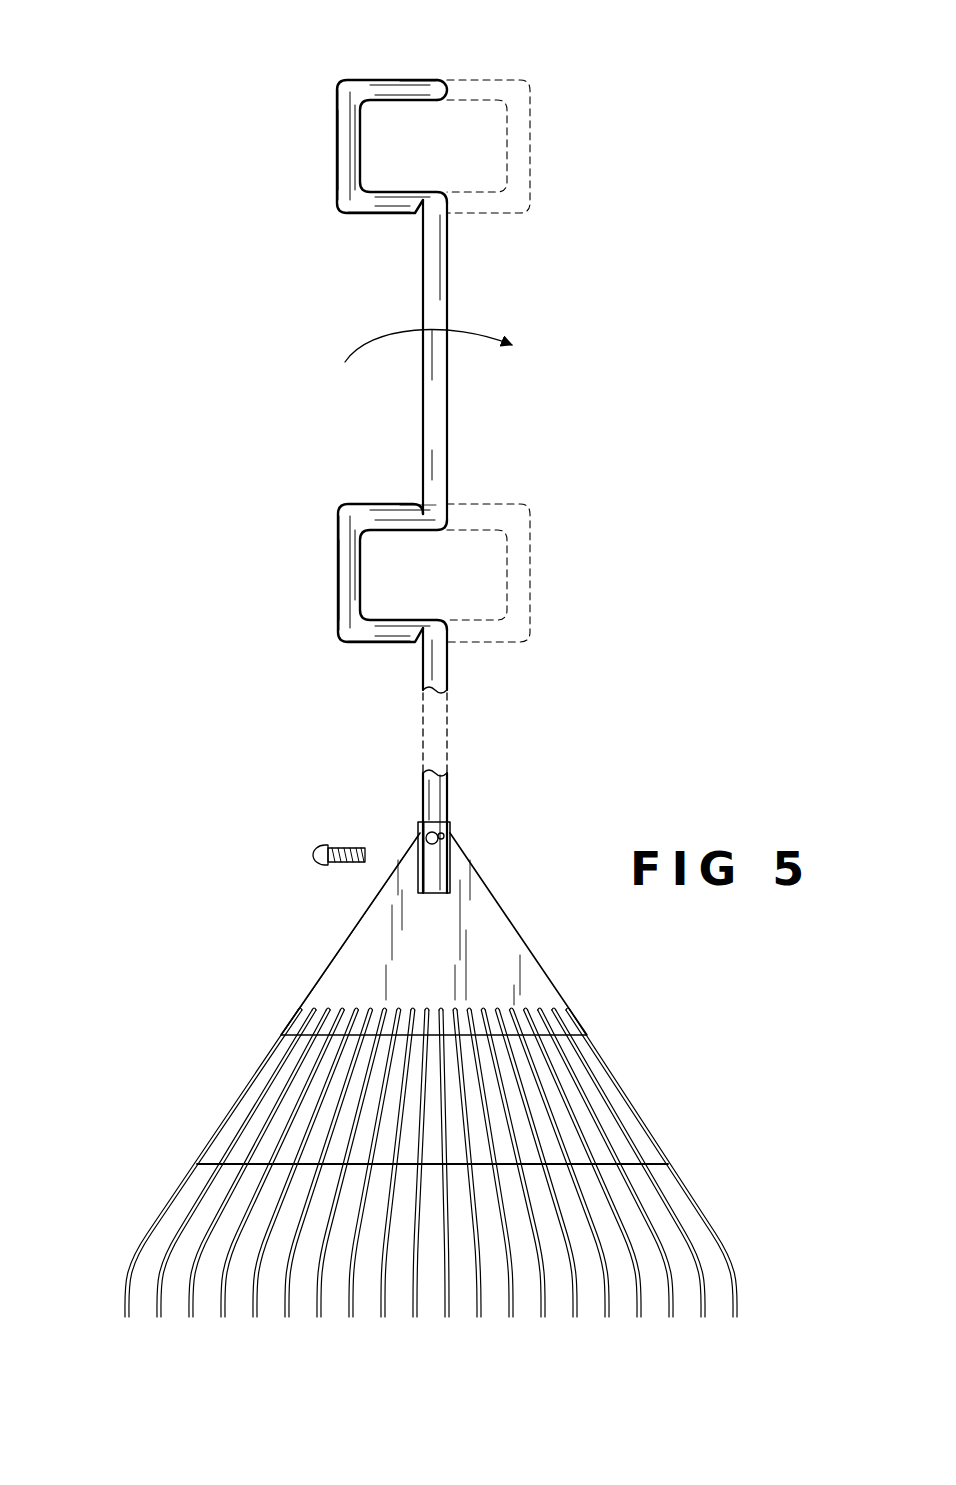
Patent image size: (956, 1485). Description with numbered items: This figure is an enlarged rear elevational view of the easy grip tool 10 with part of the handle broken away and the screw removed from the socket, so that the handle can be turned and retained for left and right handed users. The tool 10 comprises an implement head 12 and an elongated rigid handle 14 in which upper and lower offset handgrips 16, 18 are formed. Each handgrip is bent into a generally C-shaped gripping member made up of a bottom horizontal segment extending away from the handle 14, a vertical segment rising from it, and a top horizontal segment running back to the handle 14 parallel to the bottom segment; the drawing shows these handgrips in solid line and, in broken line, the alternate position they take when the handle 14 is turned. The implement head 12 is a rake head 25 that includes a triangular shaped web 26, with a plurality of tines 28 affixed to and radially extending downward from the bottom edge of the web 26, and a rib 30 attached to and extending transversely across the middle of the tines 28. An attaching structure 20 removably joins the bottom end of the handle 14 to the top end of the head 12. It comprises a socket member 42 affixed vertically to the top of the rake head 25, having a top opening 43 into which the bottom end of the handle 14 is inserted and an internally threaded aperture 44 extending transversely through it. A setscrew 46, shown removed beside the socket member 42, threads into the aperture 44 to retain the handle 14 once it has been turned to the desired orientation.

The easy grip tool 10 is at (552, 290).
The implement head 12 is at (317, 972).
The elongated rigid handle 14 is at (452, 390).
The upper offset handgrip 16 is at (336, 125).
The lower offset handgrip 18 is at (336, 565).
The attaching structure 20 is at (458, 858).
The rake head 25 is at (332, 944).
The triangular shaped web 26 is at (478, 918).
The tines 28 is at (150, 1235).
The rib 30 is at (640, 1164).
The socket member 42 is at (425, 878).
The top opening 43 is at (421, 825).
The internally threaded aperture 44 is at (440, 835).
The setscrew 46 is at (340, 850).